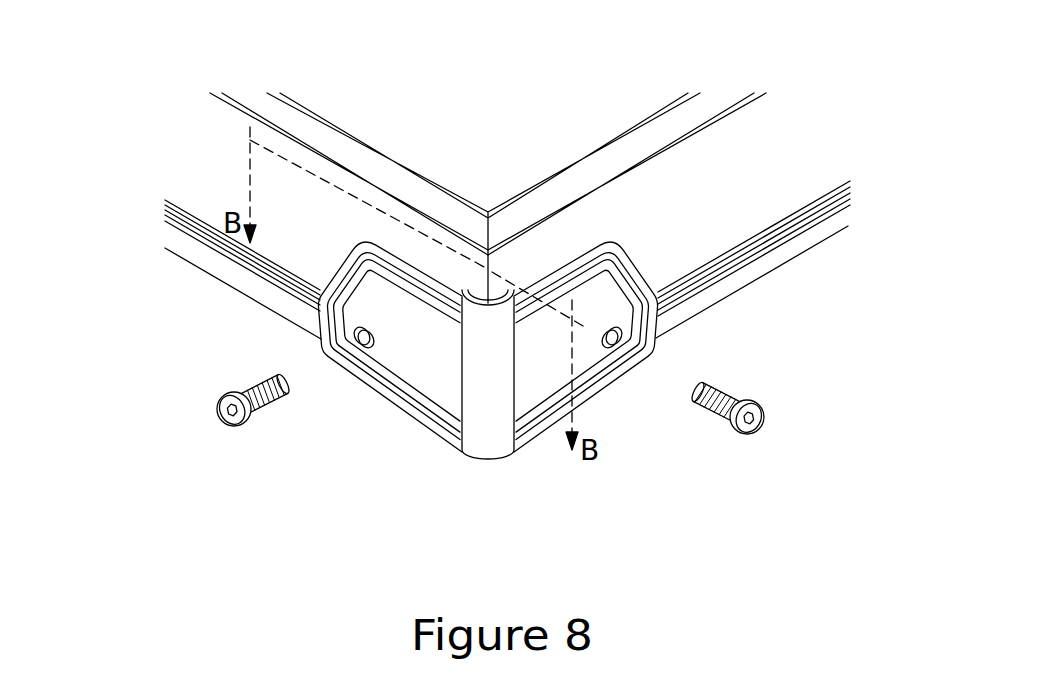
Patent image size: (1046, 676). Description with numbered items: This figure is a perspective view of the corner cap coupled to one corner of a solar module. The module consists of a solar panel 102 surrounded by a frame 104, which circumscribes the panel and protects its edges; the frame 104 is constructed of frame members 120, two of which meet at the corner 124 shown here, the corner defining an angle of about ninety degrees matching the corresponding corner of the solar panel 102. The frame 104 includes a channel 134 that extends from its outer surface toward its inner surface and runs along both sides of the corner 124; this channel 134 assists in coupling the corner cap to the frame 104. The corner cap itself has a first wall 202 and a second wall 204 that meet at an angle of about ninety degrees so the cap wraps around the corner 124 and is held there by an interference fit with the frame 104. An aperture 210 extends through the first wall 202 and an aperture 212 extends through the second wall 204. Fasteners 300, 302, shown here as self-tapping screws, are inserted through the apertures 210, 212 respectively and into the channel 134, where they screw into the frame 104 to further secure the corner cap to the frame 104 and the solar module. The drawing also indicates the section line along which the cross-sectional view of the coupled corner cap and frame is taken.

The solar panel 102 is at (374, 108).
The frame 104 is at (743, 290).
The frame members 120 is at (225, 182).
The corner 124 is at (489, 250).
The channel 134 is at (280, 287).
The first wall 202 is at (593, 410).
The second wall 204 is at (382, 416).
The aperture 210 is at (607, 348).
The aperture 212 is at (362, 352).
The fastener 300 is at (762, 423).
The fastener 302 is at (235, 437).